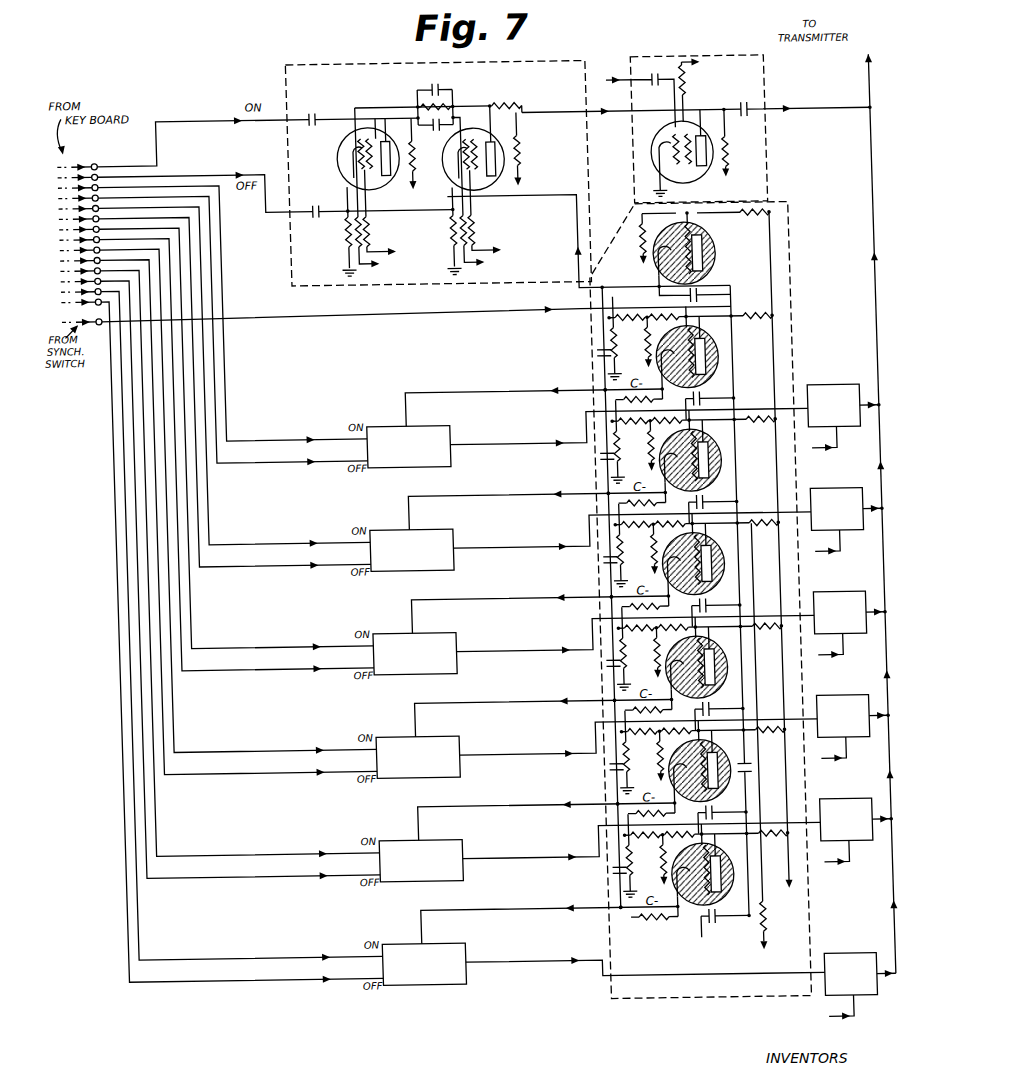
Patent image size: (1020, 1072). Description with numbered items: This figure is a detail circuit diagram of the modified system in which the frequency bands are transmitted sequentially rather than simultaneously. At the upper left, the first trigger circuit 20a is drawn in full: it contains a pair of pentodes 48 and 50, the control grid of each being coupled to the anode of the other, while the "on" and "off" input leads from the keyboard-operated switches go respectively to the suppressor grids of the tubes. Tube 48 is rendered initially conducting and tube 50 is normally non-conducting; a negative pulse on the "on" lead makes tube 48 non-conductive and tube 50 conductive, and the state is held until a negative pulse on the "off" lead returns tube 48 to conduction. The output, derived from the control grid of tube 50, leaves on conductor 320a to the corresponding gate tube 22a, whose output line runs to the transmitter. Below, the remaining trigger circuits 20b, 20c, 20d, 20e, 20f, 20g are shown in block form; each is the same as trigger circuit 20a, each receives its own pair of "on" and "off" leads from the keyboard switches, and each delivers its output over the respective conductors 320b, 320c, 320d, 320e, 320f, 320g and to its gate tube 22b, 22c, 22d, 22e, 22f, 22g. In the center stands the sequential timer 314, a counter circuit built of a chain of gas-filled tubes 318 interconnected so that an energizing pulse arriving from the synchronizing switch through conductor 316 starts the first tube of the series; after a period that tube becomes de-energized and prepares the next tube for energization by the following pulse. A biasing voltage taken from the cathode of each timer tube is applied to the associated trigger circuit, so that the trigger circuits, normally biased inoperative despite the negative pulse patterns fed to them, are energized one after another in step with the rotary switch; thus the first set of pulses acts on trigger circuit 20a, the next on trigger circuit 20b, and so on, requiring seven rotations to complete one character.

The trigger circuit 20a is at (358, 62).
The pentode 48 is at (352, 152).
The pentode 50 is at (456, 160).
The output conductor of trigger circuit 20a 320a is at (536, 200).
The gate tube 22a is at (691, 62).
The sequential timer 314 is at (798, 233).
The gas-filled tube 318 is at (712, 269).
The conductor 316 is at (334, 315).
The trigger circuit 20b is at (459, 423).
The trigger circuit 20c is at (459, 526).
The trigger circuit 20d is at (459, 630).
The trigger circuit 20e is at (459, 734).
The trigger circuit 20f is at (459, 837).
The trigger circuit 20g is at (459, 940).
The output conductor of trigger circuit 20b 320b is at (526, 391).
The output conductor of trigger circuit 20c 320c is at (526, 494).
The output conductor of trigger circuit 20d 320d is at (526, 598).
The output conductor of trigger circuit 20e 320e is at (526, 702).
The output conductor of trigger circuit 20f 320f is at (526, 805).
The output conductor of trigger circuit 20g 320g is at (526, 908).
The gate tube 22b is at (853, 390).
The gate tube 22c is at (853, 493).
The gate tube 22d is at (853, 596).
The gate tube 22e is at (853, 700).
The gate tube 22f is at (853, 804).
The gate tube 22g is at (853, 958).